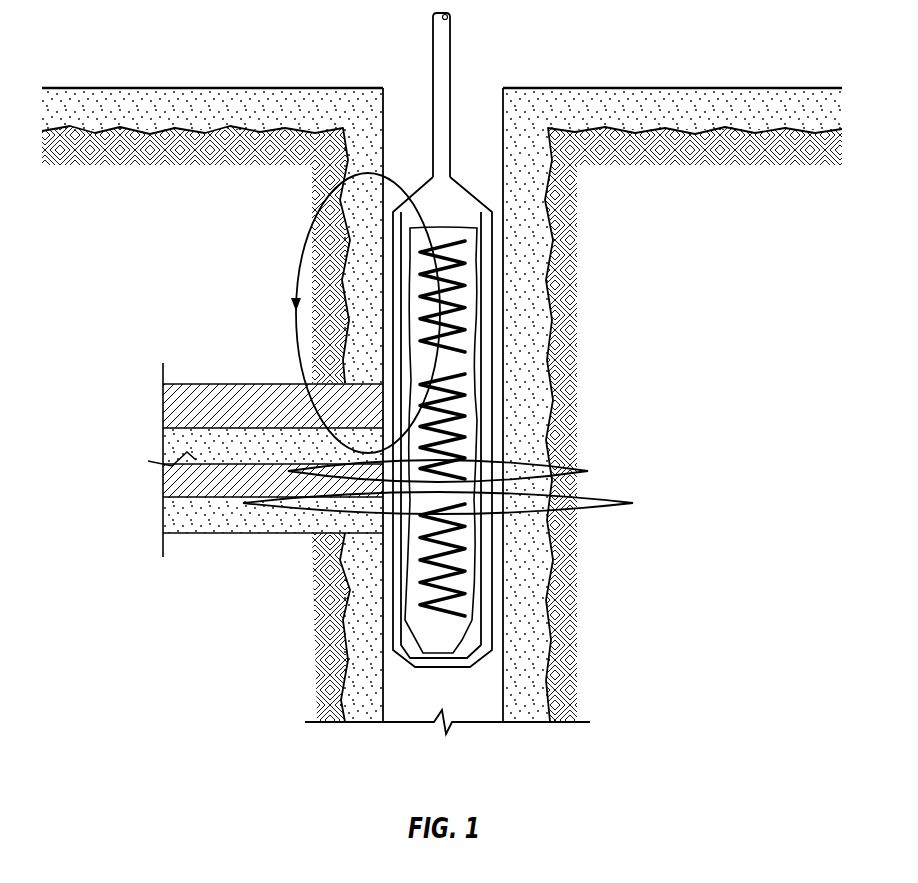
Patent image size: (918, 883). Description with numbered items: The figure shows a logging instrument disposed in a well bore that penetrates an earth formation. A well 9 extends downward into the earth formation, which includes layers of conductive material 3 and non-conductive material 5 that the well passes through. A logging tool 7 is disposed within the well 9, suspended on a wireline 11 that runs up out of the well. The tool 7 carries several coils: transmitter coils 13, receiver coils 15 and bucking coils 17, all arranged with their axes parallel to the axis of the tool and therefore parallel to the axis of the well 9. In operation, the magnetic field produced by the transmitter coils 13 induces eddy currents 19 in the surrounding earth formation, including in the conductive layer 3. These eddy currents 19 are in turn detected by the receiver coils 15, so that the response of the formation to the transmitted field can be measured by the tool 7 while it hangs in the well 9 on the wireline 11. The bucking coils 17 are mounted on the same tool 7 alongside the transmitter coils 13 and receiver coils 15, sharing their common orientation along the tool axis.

The conductive material layer 3 is at (182, 403).
The non-conductive material layer 5 is at (177, 513).
The logging tool 7 is at (403, 584).
The well 9 is at (398, 78).
The wireline 11 is at (450, 43).
The transmitter coils 13 is at (458, 306).
The receiver coils 15 is at (463, 394).
The bucking coils 17 is at (465, 570).
The eddy currents 19 is at (627, 500).